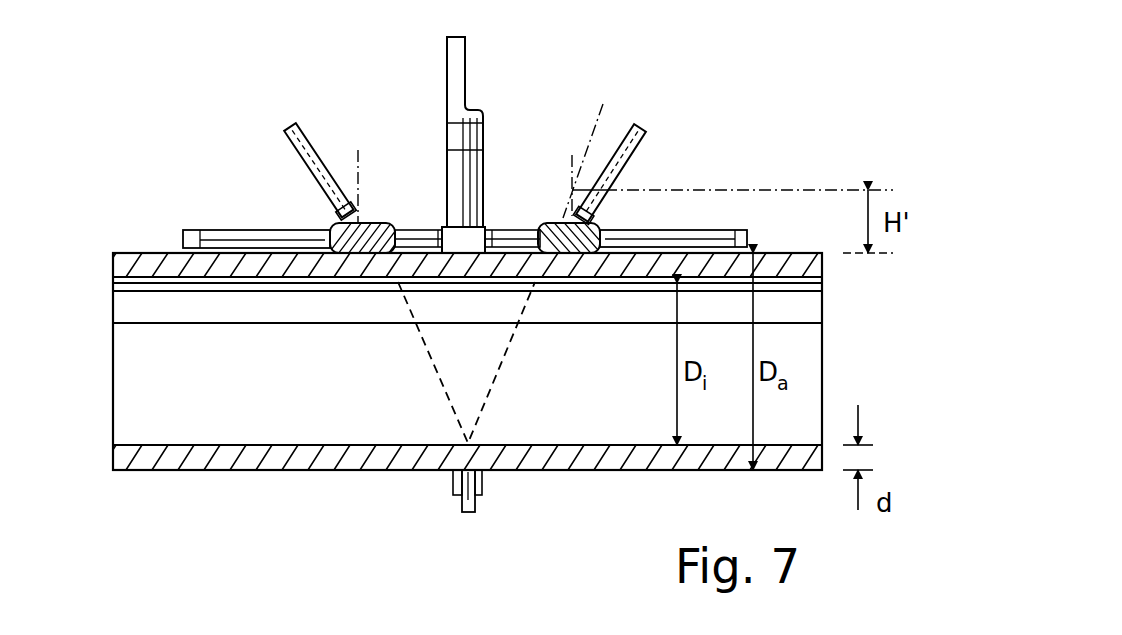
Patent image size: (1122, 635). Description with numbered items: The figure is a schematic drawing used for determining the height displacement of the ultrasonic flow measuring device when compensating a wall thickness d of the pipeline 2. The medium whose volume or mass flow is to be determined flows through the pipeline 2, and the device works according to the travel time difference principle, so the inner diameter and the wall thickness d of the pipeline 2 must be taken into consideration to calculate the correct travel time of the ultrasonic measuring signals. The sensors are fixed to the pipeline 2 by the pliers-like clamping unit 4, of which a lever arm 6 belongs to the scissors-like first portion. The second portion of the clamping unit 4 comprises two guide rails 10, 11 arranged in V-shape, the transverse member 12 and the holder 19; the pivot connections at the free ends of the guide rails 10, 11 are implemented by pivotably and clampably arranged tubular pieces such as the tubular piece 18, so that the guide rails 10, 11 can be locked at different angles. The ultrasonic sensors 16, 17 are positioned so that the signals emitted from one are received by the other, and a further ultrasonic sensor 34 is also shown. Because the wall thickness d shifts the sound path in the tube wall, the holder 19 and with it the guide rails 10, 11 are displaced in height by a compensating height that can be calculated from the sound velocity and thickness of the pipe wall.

The pipeline 2 is at (291, 470).
The clamping unit 4 is at (533, 147).
The lever arm 6 is at (457, 66).
The guide rail 10 is at (632, 157).
The guide rail 11 is at (300, 130).
The transverse member 12 is at (197, 229).
The ultrasonic sensor 16 is at (382, 221).
The ultrasonic sensor 17 is at (548, 221).
The tubular piece 18 is at (497, 524).
The holder 19 is at (481, 495).
The ultrasonic sensor 34 is at (620, 229).